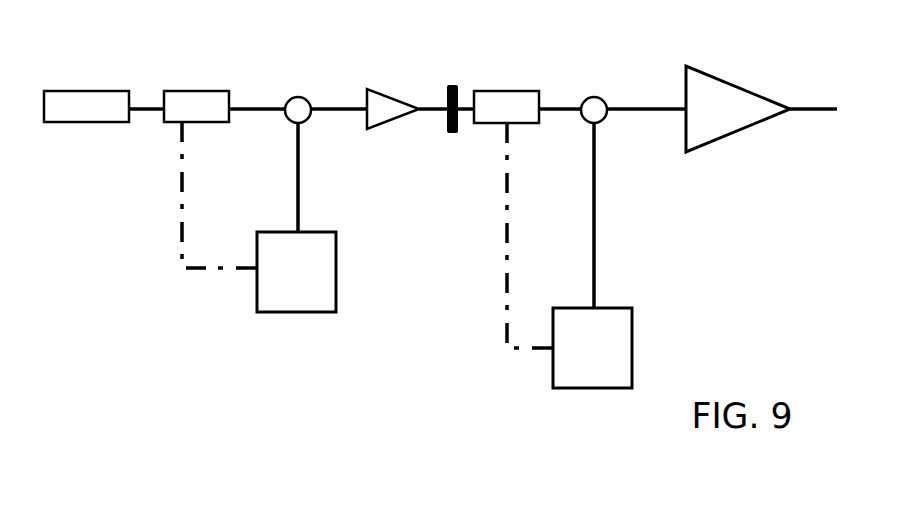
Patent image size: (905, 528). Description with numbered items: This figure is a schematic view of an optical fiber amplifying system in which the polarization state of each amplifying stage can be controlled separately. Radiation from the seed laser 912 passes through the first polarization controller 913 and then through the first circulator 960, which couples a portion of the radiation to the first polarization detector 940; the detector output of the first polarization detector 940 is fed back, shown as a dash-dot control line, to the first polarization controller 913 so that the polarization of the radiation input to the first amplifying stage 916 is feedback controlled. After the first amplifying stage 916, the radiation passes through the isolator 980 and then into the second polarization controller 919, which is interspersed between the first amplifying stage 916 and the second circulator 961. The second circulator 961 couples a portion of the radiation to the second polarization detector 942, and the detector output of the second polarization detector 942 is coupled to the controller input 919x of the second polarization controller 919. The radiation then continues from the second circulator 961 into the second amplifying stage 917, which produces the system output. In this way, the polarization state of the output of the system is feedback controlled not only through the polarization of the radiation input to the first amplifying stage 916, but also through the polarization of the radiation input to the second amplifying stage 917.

The seed laser 912 is at (93, 102).
The first polarization controller 913 is at (187, 103).
The first circulator 960 is at (297, 98).
The first polarization detector 940 is at (277, 293).
The first amplifying stage 916 is at (387, 110).
The isolator 980 is at (450, 135).
The second polarization controller 919 is at (497, 103).
The controller input 919x is at (517, 140).
The second circulator 961 is at (592, 98).
The second polarization detector 942 is at (618, 365).
The second amplifying stage 917 is at (730, 113).